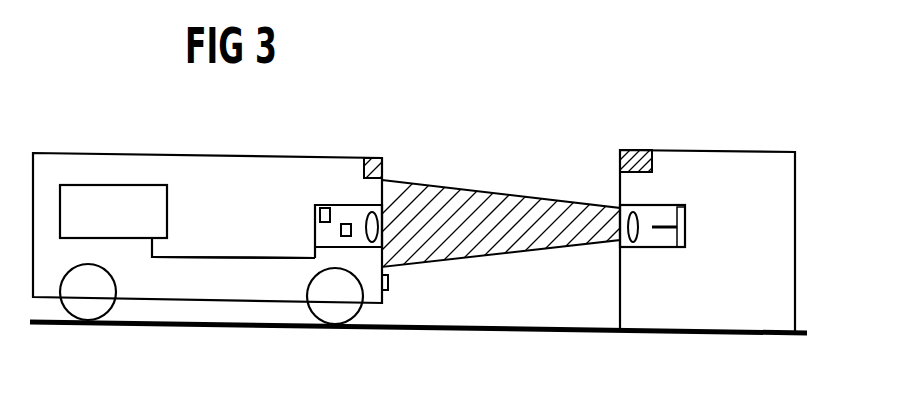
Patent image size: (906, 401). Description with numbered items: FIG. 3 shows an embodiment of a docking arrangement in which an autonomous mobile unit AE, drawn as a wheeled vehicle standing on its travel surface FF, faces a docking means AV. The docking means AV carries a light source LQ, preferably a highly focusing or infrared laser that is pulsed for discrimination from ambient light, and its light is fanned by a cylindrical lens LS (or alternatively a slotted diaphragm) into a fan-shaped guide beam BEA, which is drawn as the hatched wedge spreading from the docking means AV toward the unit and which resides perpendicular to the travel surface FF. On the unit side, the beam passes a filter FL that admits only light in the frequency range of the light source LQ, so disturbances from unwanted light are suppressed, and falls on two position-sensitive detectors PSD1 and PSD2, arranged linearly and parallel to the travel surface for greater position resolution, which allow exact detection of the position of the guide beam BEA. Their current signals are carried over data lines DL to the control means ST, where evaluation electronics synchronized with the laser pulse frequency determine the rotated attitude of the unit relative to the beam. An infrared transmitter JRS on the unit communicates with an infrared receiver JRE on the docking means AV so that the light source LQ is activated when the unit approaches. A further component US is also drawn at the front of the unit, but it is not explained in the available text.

The control means ST is at (110, 195).
The data lines DL is at (190, 257).
The position-sensitive detector PSD1 is at (318, 216).
The position-sensitive detector PSD2 is at (345, 222).
The infrared transmitter JRS is at (372, 157).
The filter FL is at (380, 227).
The fan-shaped guide beam BEA is at (505, 205).
The infrared receiver JRE is at (630, 152).
The light source LQ is at (673, 217).
The cylindrical lens LS is at (633, 245).
The ultrasonic sensor US is at (388, 292).
The autonomous mobile unit AE is at (232, 285).
The travel surface FF is at (152, 327).
The docking means AV is at (725, 293).